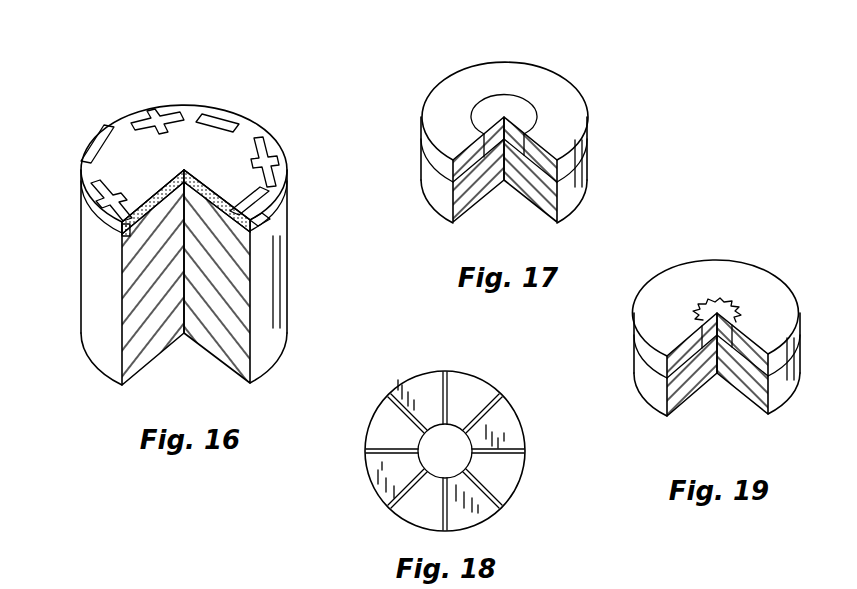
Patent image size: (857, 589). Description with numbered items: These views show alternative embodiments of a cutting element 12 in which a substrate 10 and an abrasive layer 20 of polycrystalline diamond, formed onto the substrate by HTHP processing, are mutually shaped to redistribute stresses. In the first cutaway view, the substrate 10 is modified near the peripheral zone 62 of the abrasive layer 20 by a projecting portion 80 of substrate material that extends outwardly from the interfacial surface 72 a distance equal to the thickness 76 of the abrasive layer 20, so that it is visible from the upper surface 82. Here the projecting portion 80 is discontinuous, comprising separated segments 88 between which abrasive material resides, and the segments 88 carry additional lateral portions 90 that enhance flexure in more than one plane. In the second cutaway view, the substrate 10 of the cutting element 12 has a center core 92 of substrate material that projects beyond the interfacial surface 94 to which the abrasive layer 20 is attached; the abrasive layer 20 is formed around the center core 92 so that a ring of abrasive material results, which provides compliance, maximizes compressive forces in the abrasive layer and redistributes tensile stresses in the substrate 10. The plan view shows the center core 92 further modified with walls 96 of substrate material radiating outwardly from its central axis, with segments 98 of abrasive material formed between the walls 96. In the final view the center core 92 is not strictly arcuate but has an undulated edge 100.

In FIG. 16, the substrate 10 is at (215, 327).
In FIG. 17, the substrate 10 is at (483, 182).
In FIG. 19, the substrate 10 is at (733, 380).
In FIG. 16, the cutting element 12 is at (300, 252).
In FIG. 17, the cutting element 12 is at (603, 136).
In FIG. 19, the cutting element 12 is at (803, 274).
In FIG. 18, the cutting element 12 is at (535, 422).
In FIG. 16, the abrasive layer 20 is at (194, 137).
In FIG. 17, the abrasive layer 20 is at (560, 107).
In FIG. 19, the abrasive layer 20 is at (672, 303).
In FIG. 18, the abrasive layer 20 is at (428, 370).
In FIG. 16, the peripheral zone 62 is at (117, 173).
In FIG. 17, the peripheral zone 62 is at (458, 117).
In FIG. 16, the interfacial surface 72 is at (208, 208).
In FIG. 16, the thickness 76 is at (270, 222).
In FIG. 16, the projecting portion 80 is at (122, 232).
In FIG. 16, the upper surface 82 is at (120, 130).
In FIG. 16, the segments 88 is at (231, 127).
In FIG. 16, the lateral portions 90 is at (280, 155).
In FIG. 17, the center core 92 is at (495, 103).
In FIG. 19, the center core 92 is at (720, 307).
In FIG. 18, the center core 92 is at (452, 462).
In FIG. 17, the interfacial surface 94 is at (537, 168).
In FIG. 19, the interfacial surface 94 is at (748, 360).
In FIG. 18, the walls 96 is at (421, 430).
In FIG. 18, the segments 98 is at (468, 397).
In FIG. 19, the undulated edge 100 is at (713, 295).